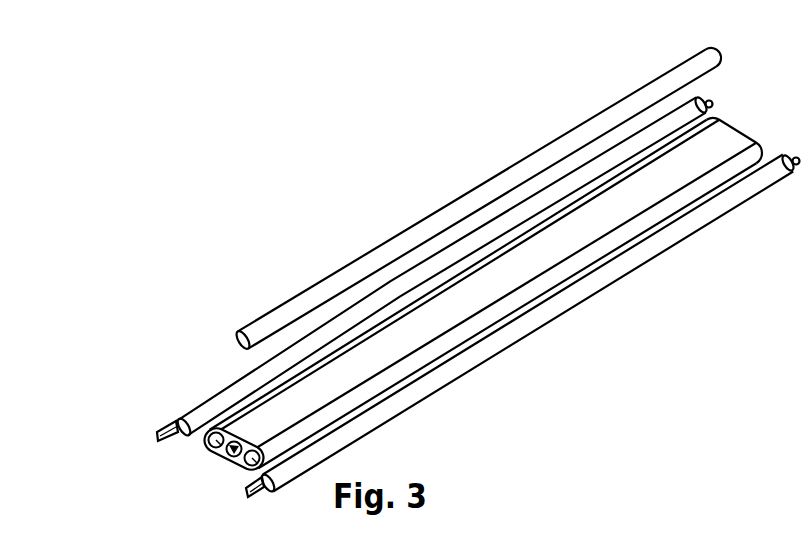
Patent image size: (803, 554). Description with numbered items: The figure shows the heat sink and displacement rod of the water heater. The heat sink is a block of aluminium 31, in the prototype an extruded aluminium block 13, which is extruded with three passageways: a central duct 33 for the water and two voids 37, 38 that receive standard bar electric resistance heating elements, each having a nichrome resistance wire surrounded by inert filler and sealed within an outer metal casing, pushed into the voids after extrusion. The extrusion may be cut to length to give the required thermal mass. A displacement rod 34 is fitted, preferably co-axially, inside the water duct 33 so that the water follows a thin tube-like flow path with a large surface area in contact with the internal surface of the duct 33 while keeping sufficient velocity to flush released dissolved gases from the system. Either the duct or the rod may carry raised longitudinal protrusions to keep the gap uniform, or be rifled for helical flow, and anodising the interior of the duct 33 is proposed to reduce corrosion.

The extruded aluminium block 13 is at (228, 398).
The block of aluminium 31 is at (436, 336).
The duct 33 is at (218, 456).
The displacement rod 34 is at (340, 283).
The void 37 is at (206, 440).
The void 38 is at (228, 469).